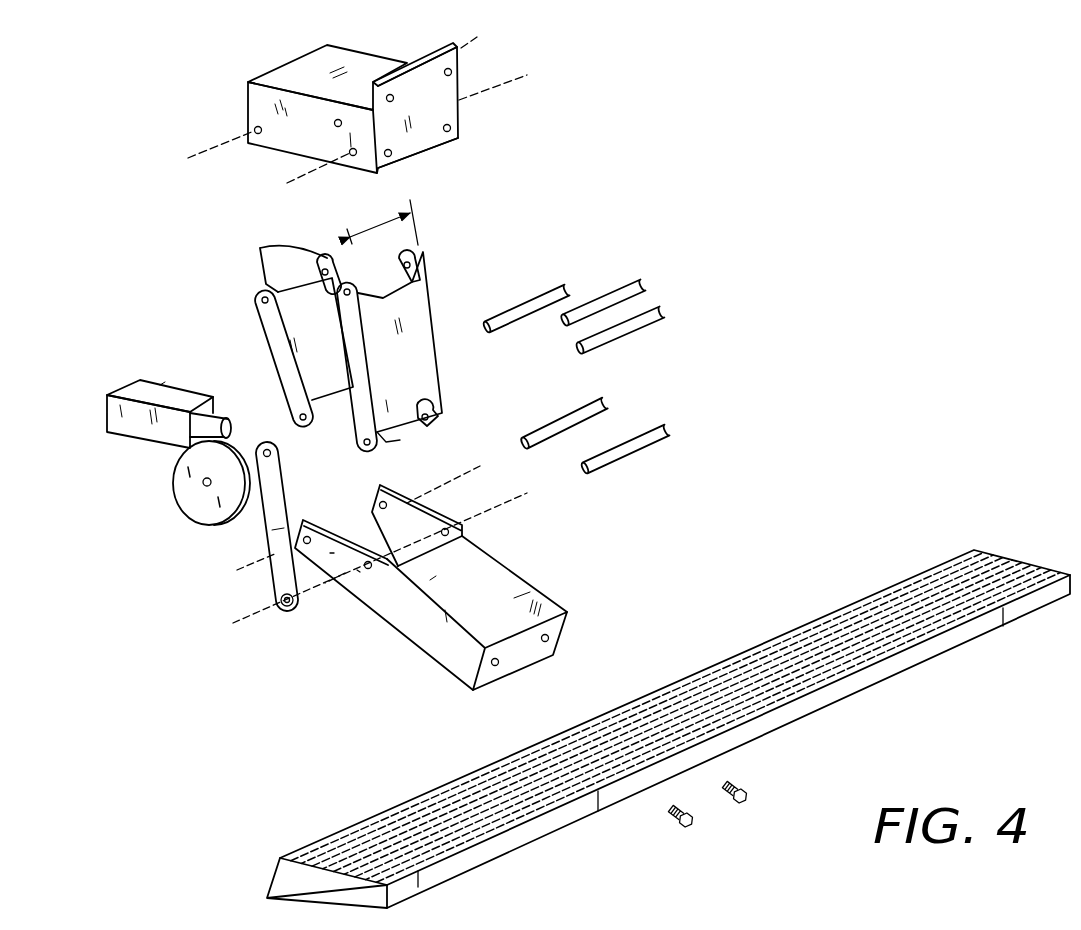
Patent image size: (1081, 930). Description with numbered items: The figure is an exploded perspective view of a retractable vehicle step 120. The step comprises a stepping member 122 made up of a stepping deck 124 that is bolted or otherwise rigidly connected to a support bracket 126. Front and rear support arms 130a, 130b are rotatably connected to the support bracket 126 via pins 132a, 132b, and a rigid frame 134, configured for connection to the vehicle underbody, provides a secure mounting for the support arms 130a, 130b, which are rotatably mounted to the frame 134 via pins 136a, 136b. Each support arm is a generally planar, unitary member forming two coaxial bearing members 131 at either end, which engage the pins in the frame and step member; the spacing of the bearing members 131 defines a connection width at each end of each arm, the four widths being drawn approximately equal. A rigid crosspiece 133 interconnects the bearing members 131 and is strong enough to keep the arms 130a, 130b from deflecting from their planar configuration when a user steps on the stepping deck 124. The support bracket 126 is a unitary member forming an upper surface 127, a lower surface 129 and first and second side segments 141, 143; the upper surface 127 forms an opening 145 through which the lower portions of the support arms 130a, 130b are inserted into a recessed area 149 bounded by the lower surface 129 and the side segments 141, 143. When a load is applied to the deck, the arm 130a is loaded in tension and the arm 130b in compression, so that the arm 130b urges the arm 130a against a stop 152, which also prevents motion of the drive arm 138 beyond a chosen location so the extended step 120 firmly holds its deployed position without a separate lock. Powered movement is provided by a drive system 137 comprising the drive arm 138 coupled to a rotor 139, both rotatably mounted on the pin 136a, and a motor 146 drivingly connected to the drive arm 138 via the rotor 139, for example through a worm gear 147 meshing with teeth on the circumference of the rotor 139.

The retractable vehicle step 120 is at (884, 311).
The stepping member 122 is at (619, 612).
The stepping deck 124 is at (847, 604).
The support bracket 126 is at (530, 562).
The upper surface 127 is at (533, 607).
The lower surface 129 is at (462, 530).
The front support arm 130a is at (428, 292).
The rear support arm 130b is at (270, 353).
The coaxial bearing members 131 is at (264, 247).
The pin 132a is at (670, 428).
The pin 132b is at (607, 401).
The rigid crosspiece 133 is at (386, 442).
The rigid frame 134 is at (293, 63).
The pin 136a is at (647, 284).
The pin 136b is at (570, 288).
The drive system 137 is at (166, 549).
The drive arm 138 is at (272, 530).
The rotor 139 is at (173, 490).
The first side segment 141 is at (330, 553).
The second side segment 143 is at (400, 505).
The opening 145 is at (357, 570).
The motor 146 is at (120, 388).
The worm gear 147 is at (223, 413).
The recessed area 149 is at (368, 512).
The stop 152 is at (667, 308).